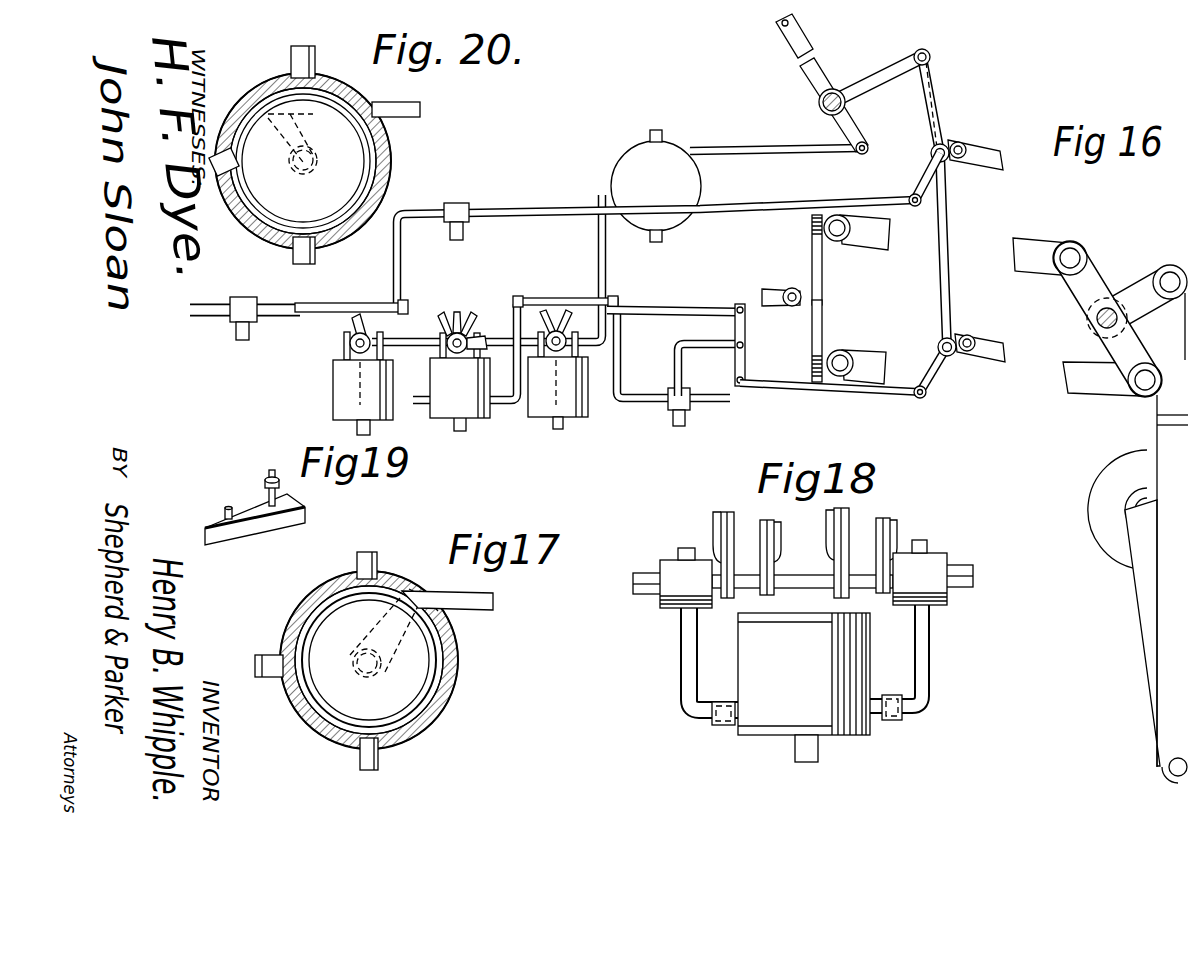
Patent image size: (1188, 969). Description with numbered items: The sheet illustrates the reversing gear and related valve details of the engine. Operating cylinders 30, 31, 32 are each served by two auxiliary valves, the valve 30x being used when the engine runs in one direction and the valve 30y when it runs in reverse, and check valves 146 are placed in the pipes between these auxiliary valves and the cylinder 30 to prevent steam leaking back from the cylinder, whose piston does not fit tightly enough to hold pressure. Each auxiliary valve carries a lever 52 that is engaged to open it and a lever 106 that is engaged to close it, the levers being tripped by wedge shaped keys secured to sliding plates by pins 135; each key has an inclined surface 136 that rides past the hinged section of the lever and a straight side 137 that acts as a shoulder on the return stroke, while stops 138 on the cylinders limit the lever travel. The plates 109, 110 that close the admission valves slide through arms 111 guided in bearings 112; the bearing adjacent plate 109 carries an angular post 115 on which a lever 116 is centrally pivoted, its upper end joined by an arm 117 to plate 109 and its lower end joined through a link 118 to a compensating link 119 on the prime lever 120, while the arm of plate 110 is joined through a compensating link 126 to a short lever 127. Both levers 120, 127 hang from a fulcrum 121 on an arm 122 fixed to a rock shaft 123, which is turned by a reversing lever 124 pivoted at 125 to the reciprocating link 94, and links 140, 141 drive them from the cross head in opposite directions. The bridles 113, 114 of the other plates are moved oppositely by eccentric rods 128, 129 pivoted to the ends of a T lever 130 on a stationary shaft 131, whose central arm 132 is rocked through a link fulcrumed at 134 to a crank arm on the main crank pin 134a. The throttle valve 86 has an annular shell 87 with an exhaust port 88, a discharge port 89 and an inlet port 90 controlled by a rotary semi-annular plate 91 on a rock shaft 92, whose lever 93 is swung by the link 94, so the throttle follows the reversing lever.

In FIG. 16, the operating cylinder 30 is at (558, 393).
In FIG. 18, the operating cylinder 30 is at (804, 687).
In FIG. 18, the auxiliary valve 30x is at (672, 578).
In FIG. 18, the auxiliary valve 30y is at (933, 572).
In FIG. 16, the operating cylinder 31 is at (363, 397).
In FIG. 16, the operating cylinder 32 is at (460, 388).
In FIG. 18, the lever 52 is at (712, 519).
In FIG. 16, the throttle valve 86 is at (656, 186).
In FIG. 20, the throttle valve 86 is at (341, 93).
In FIG. 17, the throttle valve 86 is at (456, 641).
In FIG. 20, the annular shell 87 is at (394, 142).
In FIG. 17, the annular shell 87 is at (312, 609).
In FIG. 20, the exhaust port 88 is at (316, 57).
In FIG. 17, the exhaust port 88 is at (378, 561).
In FIG. 20, the steam discharge port 89 is at (233, 163).
In FIG. 17, the steam discharge port 89 is at (264, 654).
In FIG. 20, the steam inlet port 90 is at (317, 253).
In FIG. 17, the steam inlet port 90 is at (380, 761).
In FIG. 20, the rotary semi-annular plate 91 is at (392, 168).
In FIG. 17, the rotary semi-annular plate 91 is at (450, 700).
In FIG. 20, the rock shaft 92 is at (315, 160).
In FIG. 17, the rock shaft 92 is at (360, 657).
In FIG. 17, the lever 93 is at (410, 596).
In FIG. 16, the reciprocating link 94 is at (743, 147).
In FIG. 20, the reciprocating link 94 is at (399, 106).
In FIG. 17, the reciprocating link 94 is at (477, 600).
In FIG. 18, the lever 106 is at (833, 562).
In FIG. 16, the plate 109 is at (560, 288).
In FIG. 16, the plate 110 is at (326, 302).
In FIG. 16, the arm 111 is at (403, 256).
In FIG. 16, the bearing 112 is at (460, 205).
In FIG. 16, the bridle 113 is at (823, 270).
In FIG. 16, the bridle 114 is at (823, 328).
In FIG. 16, the angular post 115 is at (675, 346).
In FIG. 16, the lever 116 is at (746, 326).
In FIG. 16, the arm 117 is at (660, 307).
In FIG. 16, the link 118 is at (808, 396).
In FIG. 16, the compensating link 119 is at (934, 388).
In FIG. 16, the prime lever 120 is at (946, 229).
In FIG. 16, the fulcrum 121 is at (931, 57).
In FIG. 16, the arm 122 is at (856, 84).
In FIG. 16, the rock shaft 123 is at (821, 104).
In FIG. 16, the reversing lever 124 is at (806, 29).
In FIG. 16, the pivotal connection 125 is at (860, 152).
In FIG. 16, the compensating link 126 is at (922, 182).
In FIG. 16, the short lever 127 is at (938, 128).
In FIG. 16, the link 128 is at (876, 240).
In FIG. 16, the link 129 is at (880, 358).
In FIG. 16, the T lever 130 is at (1094, 278).
In FIG. 16, the stationary shaft 131 is at (1097, 320).
In FIG. 16, the central arm 132 is at (1147, 275).
In FIG. 16, the fulcrum 134 is at (1166, 770).
In FIG. 16, the main crank pin 134a is at (1093, 538).
In FIG. 19, the pin 135 is at (232, 505).
In FIG. 19, the inclined surface 136 is at (268, 528).
In FIG. 19, the straight side 137 is at (284, 488).
In FIG. 16, the stop 138 is at (344, 340).
In FIG. 16, the link 140 is at (999, 364).
In FIG. 16, the link 141 is at (1000, 166).
In FIG. 18, the check valve 146 is at (720, 728).